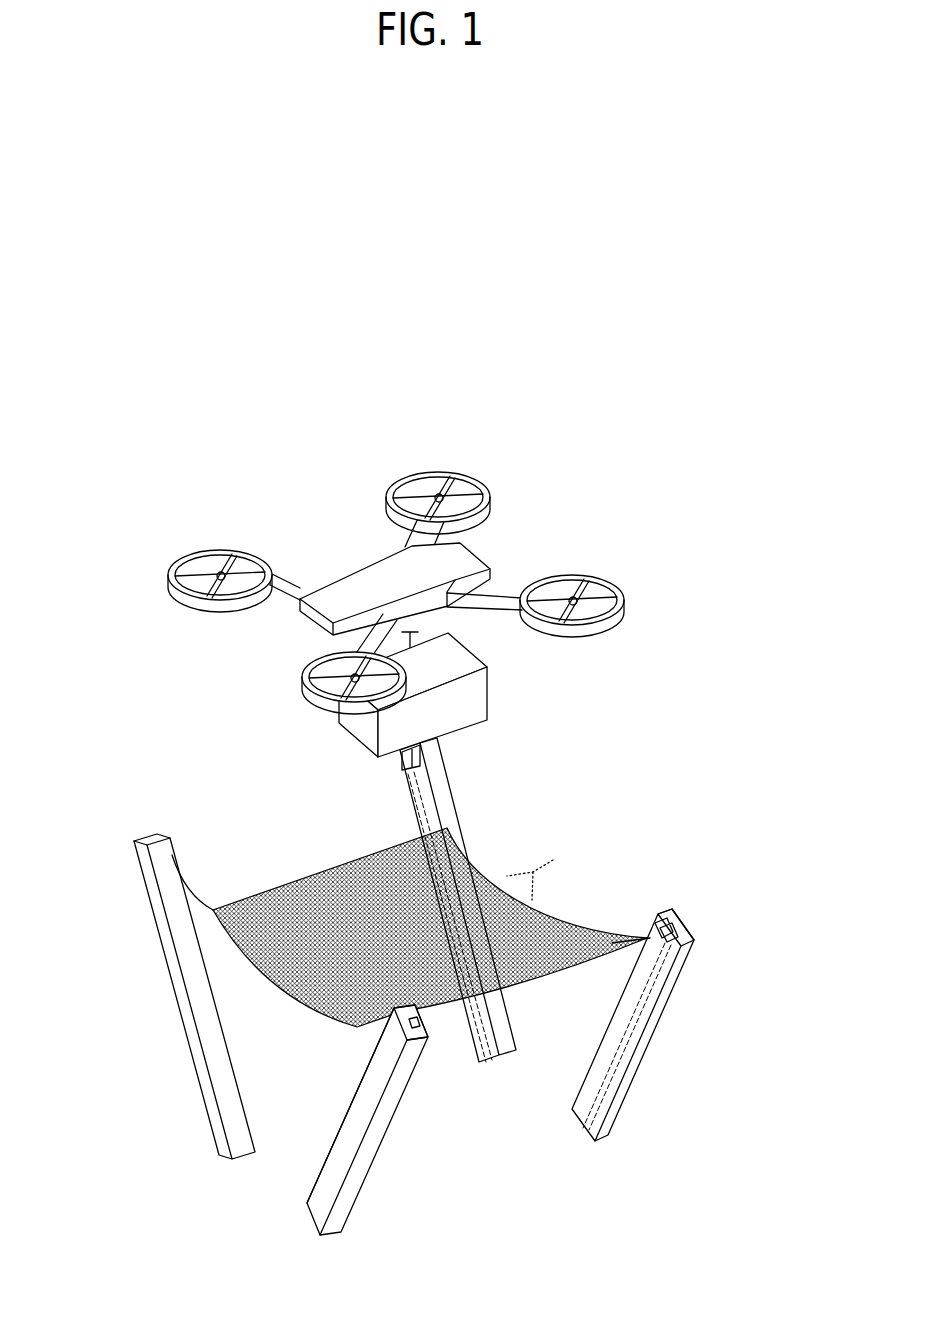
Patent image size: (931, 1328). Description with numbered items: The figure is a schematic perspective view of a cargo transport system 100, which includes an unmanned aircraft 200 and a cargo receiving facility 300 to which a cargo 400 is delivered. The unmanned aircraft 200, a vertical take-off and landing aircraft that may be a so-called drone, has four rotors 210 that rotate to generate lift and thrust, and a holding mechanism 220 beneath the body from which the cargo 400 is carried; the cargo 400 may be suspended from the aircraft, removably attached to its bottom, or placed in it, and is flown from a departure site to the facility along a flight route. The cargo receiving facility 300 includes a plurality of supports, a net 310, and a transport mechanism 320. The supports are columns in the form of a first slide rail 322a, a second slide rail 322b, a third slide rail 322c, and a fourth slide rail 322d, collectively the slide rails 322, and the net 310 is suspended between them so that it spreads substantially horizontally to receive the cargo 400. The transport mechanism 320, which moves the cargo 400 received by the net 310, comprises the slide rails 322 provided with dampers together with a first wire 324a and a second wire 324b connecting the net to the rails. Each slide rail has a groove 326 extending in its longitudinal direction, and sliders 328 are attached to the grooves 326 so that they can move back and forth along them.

The cargo transport system 100 is at (515, 206).
The unmanned aircraft 200 is at (355, 560).
The rotors 210 is at (432, 482).
The holding mechanism 220 is at (410, 633).
The cargo receiving facility 300 is at (657, 713).
The net 310 is at (288, 878).
The transport mechanism 320 is at (656, 761).
The slide rails 322 is at (143, 830).
The first slide rail 322a is at (142, 888).
The second slide rail 322b is at (362, 1090).
The third slide rail 322c is at (447, 792).
The fourth slide rail 322d is at (697, 938).
The first wire 324a is at (200, 885).
The second wire 324b is at (623, 940).
The grooves 326 is at (428, 812).
The sliders 328 is at (400, 757).
The cargo 400 is at (487, 691).